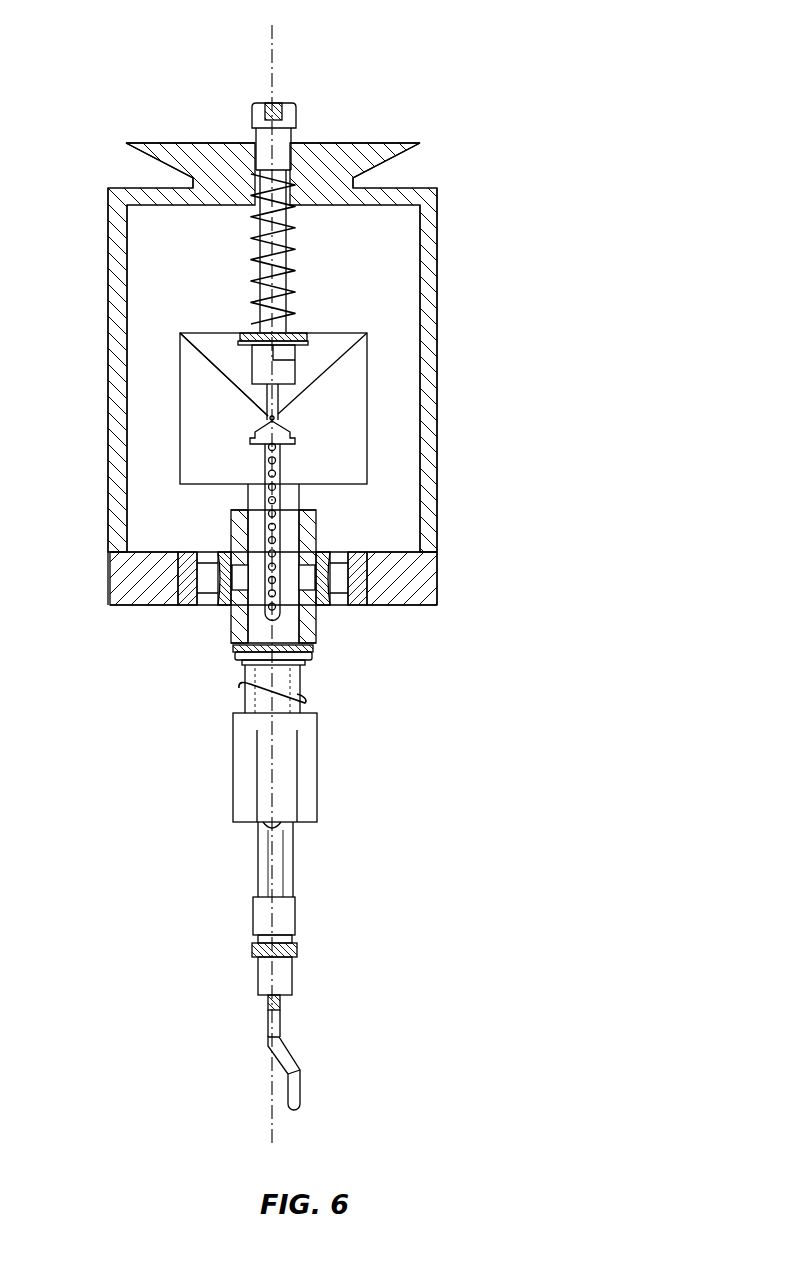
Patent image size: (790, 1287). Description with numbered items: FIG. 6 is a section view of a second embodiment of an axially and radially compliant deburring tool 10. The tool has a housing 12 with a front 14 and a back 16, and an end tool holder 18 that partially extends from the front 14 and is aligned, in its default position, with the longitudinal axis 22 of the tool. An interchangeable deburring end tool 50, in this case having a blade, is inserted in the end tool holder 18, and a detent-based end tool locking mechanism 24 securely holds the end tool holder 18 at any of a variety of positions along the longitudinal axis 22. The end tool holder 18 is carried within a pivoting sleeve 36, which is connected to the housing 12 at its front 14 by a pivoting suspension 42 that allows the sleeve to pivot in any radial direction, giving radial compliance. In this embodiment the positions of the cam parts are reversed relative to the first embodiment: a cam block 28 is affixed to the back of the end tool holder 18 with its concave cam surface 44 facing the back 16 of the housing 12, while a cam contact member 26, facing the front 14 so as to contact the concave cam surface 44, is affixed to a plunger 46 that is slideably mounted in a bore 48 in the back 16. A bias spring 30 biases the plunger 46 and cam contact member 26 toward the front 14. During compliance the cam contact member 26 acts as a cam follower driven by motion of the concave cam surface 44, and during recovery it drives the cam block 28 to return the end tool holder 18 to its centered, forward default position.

The axially and radially compliant deburring tool 10 is at (606, 258).
The housing 12 is at (437, 313).
The front 14 is at (398, 606).
The back 16 is at (350, 143).
The end tool holder 18 is at (258, 868).
The longitudinal axis 22 is at (273, 52).
The detent-based end tool locking mechanism 24 is at (317, 772).
The cam contact member 26 is at (273, 396).
The cam block 28 is at (327, 412).
The bias spring 30 is at (293, 274).
The pivoting sleeve 36 is at (316, 531).
The pivoting suspension 42 is at (207, 607).
The concave cam surface 44 is at (227, 363).
The plunger 46 is at (293, 236).
The bore 48 is at (255, 158).
The interchangeable deburring end tool 50 is at (293, 1085).